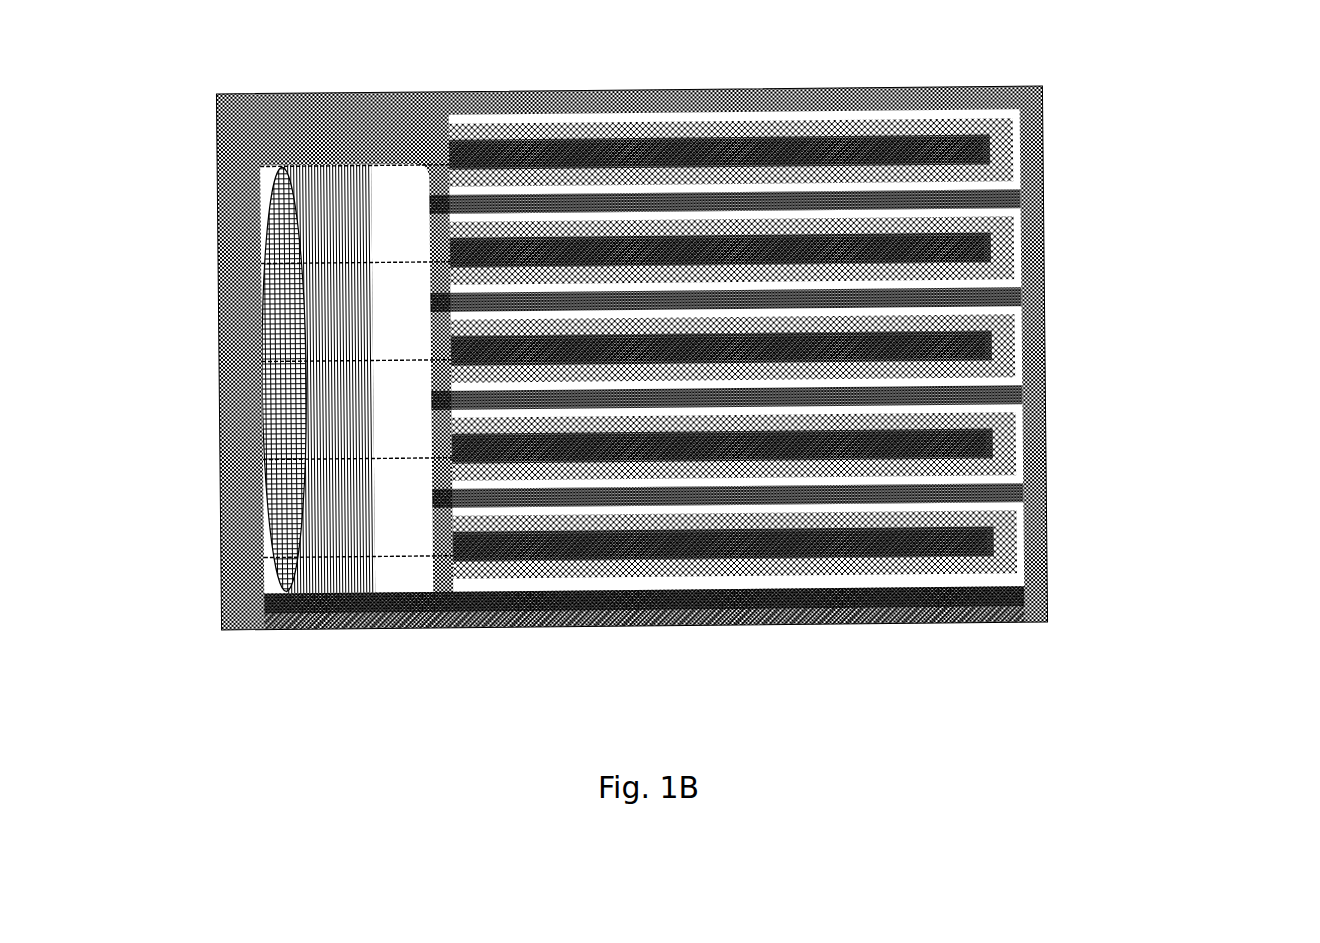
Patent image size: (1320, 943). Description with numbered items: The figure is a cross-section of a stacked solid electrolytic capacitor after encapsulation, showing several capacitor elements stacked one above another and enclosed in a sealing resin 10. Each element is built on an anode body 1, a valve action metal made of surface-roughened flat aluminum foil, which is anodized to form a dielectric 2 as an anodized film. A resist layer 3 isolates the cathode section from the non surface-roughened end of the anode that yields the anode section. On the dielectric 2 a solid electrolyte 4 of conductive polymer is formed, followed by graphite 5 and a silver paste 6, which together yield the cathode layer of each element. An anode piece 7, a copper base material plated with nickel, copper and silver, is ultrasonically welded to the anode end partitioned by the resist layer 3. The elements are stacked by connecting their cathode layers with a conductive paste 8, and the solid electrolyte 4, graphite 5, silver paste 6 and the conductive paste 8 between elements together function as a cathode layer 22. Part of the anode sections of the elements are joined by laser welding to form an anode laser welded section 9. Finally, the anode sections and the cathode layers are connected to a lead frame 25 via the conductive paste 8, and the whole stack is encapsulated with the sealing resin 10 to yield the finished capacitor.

The anode body 1 is at (300, 553).
The dielectric 2 is at (1010, 540).
The resist layer 3 is at (440, 387).
The solid electrolyte 4 is at (810, 457).
The graphite 5 is at (1013, 373).
The silver paste 6 is at (1015, 319).
The anode piece 7 is at (308, 630).
The conductive paste 8 is at (1043, 210).
The anode laser welded section 9 is at (262, 277).
The sealing resin 10 is at (431, 195).
The cathode layer 22 is at (775, 408).
The lead frame 25 is at (935, 627).